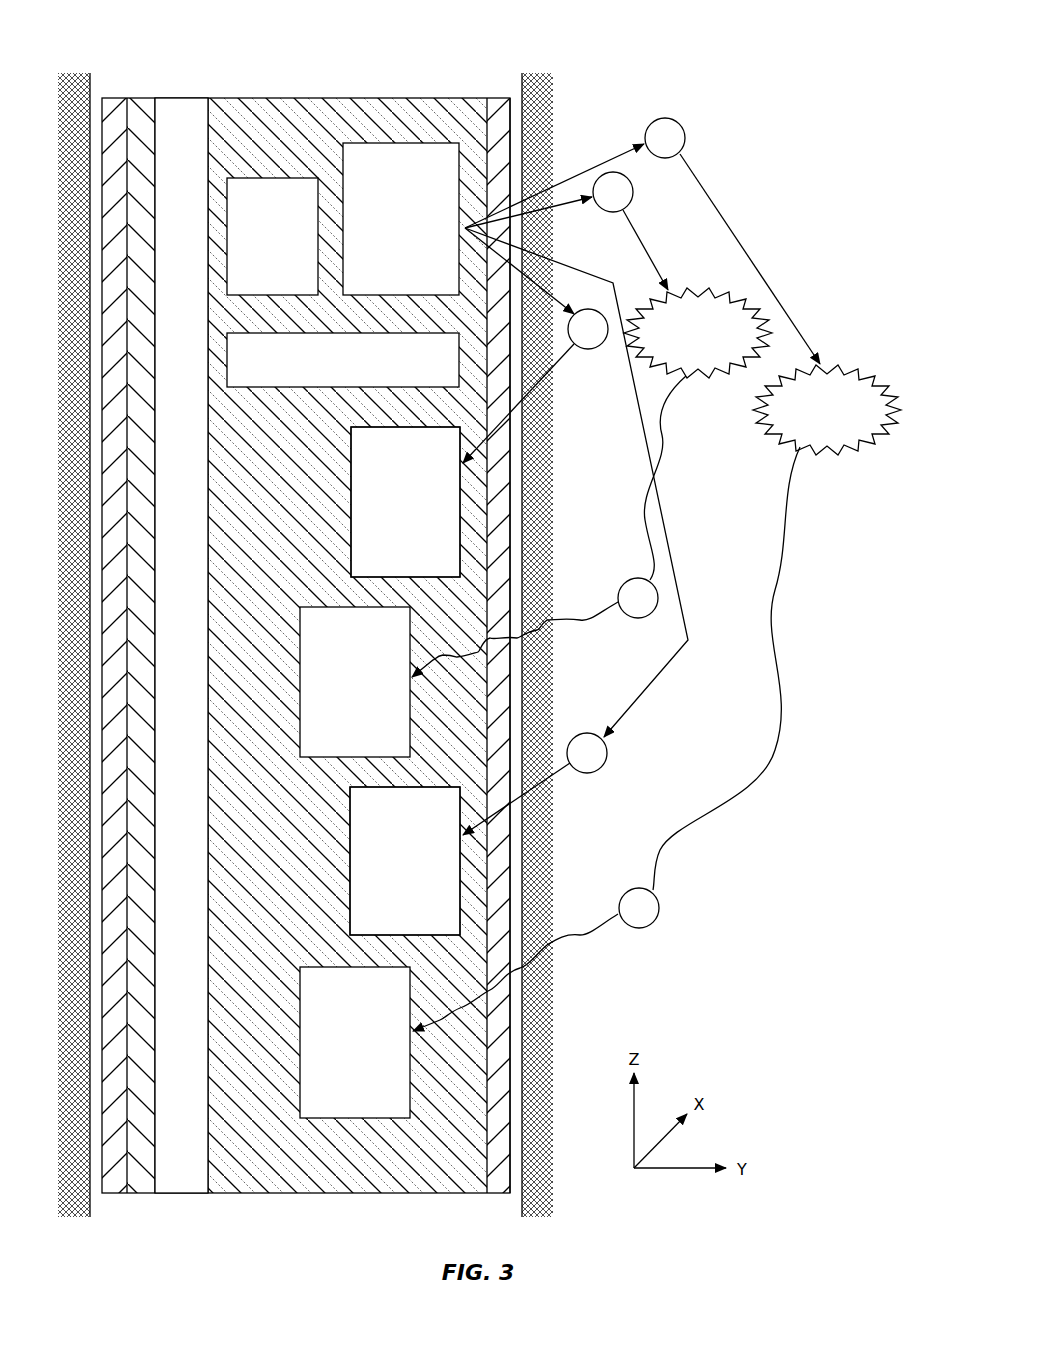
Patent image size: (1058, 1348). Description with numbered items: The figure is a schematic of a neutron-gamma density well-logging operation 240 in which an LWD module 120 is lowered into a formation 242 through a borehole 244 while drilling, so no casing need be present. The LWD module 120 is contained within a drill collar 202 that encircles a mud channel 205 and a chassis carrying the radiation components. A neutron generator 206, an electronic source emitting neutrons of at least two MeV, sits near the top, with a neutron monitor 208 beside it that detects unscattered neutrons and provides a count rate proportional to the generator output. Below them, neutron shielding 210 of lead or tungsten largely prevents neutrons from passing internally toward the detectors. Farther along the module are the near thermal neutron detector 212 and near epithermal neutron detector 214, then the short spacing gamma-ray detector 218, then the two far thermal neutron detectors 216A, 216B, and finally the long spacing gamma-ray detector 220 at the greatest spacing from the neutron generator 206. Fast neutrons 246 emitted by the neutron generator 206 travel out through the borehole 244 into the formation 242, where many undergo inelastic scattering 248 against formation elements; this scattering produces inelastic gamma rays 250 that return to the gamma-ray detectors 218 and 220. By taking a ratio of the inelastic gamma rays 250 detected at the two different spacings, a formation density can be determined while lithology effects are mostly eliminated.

The LWD module 120 is at (535, 98).
The drill collar 202 is at (112, 100).
The mud channel 205 is at (183, 100).
The neutron generator 206 is at (400, 142).
The neutron monitor 208 is at (226, 240).
The neutron shielding 210 is at (226, 358).
The near thermal neutron detector 212 is at (463, 538).
The near epithermal neutron detector 214 is at (405, 502).
The far thermal neutron detector 216A is at (462, 787).
The far thermal neutron detector 216B is at (405, 861).
The short spacing gamma-ray detector 218 is at (410, 682).
The long spacing gamma-ray detector 220 is at (300, 1020).
The neutron-gamma density well-logging operation 240 is at (627, 39).
The formation 242 is at (630, 89).
The borehole 244 is at (514, 100).
The neutrons 246 is at (673, 120).
The inelastic scattering 248 is at (678, 292).
The inelastic gamma rays 250 is at (632, 617).